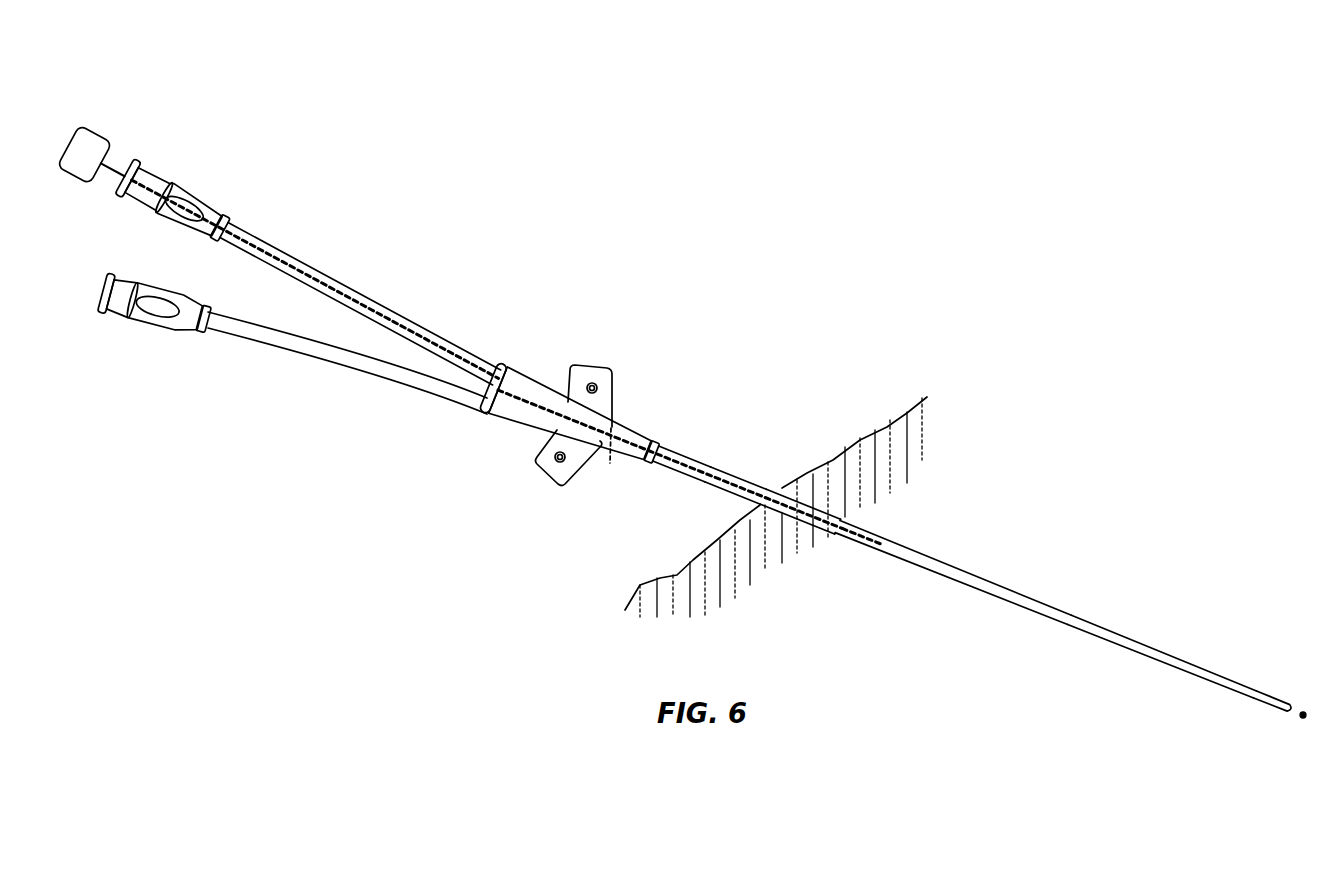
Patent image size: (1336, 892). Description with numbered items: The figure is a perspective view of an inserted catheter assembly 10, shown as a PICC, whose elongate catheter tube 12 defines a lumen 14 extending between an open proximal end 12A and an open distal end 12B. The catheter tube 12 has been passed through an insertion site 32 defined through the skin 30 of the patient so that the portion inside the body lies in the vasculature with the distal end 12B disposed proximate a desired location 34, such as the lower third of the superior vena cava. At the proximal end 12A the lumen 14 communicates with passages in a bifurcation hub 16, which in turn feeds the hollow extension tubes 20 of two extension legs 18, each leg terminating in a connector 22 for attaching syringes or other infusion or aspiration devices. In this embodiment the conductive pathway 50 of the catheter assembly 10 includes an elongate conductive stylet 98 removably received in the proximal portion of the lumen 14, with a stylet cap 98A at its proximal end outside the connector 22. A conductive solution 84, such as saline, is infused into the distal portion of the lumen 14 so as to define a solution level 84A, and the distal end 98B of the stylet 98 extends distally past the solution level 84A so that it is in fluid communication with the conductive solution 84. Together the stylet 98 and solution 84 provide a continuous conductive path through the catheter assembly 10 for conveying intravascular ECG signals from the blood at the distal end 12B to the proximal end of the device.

The catheter assembly 10 is at (689, 452).
The catheter tube 12 is at (973, 575).
The proximal end 12A is at (747, 446).
The distal end 12B is at (1290, 710).
The lumen 14 is at (1177, 667).
The bifurcation hub 16 is at (507, 423).
The extension legs 18 is at (286, 288).
The extension tubes 20 is at (313, 270).
The connector 22 is at (183, 200).
The skin 30 is at (734, 502).
The insertion site 32 is at (775, 495).
The desired location 34 is at (1304, 712).
The conductive pathway 50 is at (145, 197).
The conductive solution 84 is at (883, 537).
The solution level 84A is at (727, 477).
The conductive stylet 98 is at (527, 329).
The stylet cap 98A is at (92, 137).
The distal end of stylet 98B is at (850, 523).